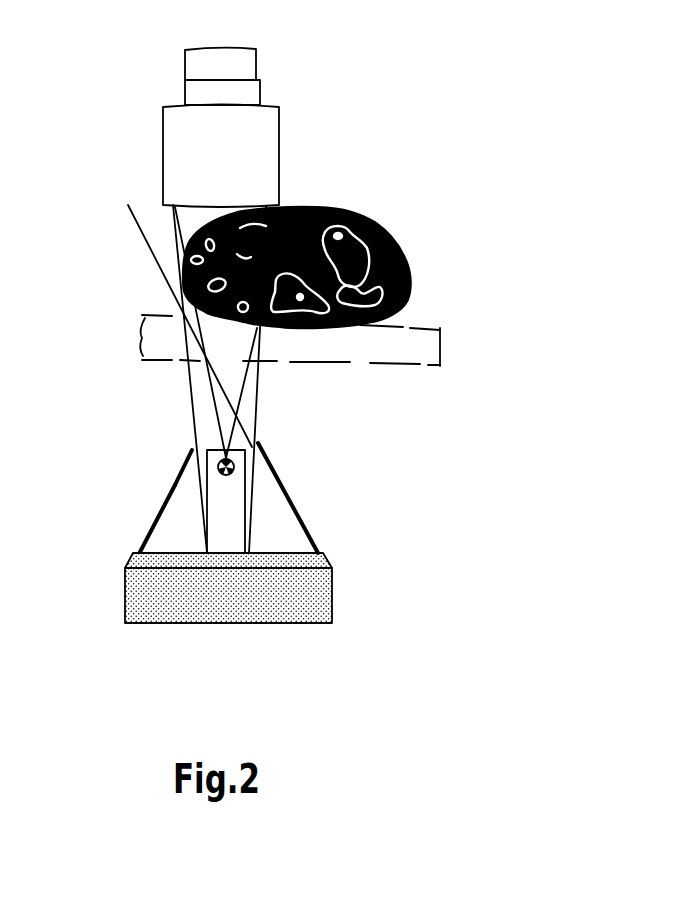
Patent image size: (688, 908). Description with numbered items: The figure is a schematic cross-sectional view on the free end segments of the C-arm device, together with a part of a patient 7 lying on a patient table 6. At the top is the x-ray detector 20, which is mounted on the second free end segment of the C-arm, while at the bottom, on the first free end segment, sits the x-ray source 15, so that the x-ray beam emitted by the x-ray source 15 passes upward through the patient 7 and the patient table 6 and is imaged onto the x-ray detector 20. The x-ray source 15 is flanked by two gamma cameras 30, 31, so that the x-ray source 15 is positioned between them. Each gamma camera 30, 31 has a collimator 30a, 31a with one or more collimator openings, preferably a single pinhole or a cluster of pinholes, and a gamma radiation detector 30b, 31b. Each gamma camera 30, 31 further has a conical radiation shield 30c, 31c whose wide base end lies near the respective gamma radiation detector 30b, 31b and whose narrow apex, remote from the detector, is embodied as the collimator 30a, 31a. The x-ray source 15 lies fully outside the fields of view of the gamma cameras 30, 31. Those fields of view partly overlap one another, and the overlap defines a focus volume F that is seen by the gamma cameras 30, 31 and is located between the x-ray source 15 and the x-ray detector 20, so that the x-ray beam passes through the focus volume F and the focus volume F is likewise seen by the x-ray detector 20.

The x-ray detector 20 is at (263, 152).
The patient 7 is at (402, 252).
The focus volume F is at (183, 266).
The patient table 6 is at (440, 345).
The gamma camera 30 is at (272, 503).
The collimator 30a is at (268, 438).
The gamma radiation detector 30b is at (277, 562).
The conical radiation shield 30c is at (288, 497).
The gamma camera 31 is at (115, 475).
The collimator 31a is at (190, 452).
The gamma radiation detector 31b is at (140, 548).
The conical radiation shield 31c is at (157, 517).
The x-ray source 15 is at (227, 528).